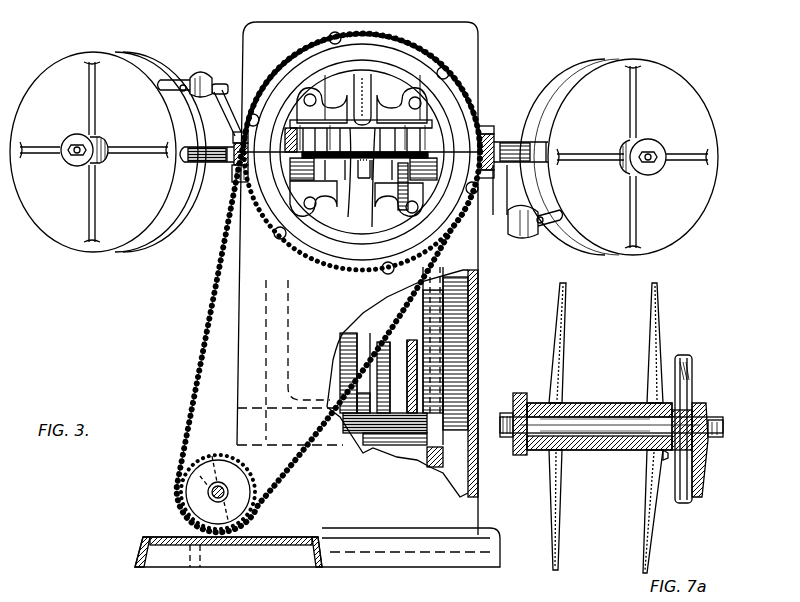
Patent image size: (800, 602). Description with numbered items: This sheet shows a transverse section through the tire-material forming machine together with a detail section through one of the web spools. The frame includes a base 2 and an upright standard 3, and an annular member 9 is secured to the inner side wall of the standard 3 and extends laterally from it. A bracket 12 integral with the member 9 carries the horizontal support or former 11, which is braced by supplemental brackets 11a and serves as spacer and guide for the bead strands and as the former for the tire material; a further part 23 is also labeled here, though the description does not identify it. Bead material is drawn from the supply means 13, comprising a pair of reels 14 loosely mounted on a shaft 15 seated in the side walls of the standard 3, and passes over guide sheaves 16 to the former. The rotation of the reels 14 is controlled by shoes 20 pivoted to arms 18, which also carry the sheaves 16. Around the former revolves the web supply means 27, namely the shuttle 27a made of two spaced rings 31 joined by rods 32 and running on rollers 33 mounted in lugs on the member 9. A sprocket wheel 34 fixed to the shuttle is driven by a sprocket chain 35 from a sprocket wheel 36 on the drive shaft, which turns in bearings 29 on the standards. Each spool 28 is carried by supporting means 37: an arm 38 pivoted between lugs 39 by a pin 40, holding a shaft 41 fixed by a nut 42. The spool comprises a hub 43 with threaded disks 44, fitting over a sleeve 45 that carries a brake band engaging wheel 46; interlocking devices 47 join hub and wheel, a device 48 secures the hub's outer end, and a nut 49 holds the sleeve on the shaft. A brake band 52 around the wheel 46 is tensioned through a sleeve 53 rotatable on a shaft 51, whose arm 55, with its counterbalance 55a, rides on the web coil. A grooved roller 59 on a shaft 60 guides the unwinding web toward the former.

In FIG. 3, the base 2 is at (135, 542).
In FIG. 3, the standard 3 is at (357, 278).
In FIG. 3, the annular member 9 is at (358, 70).
In FIG. 3, the support 11 is at (346, 244).
In FIG. 3, the supplemental brackets 11a is at (296, 115).
In FIG. 3, the bracket 12 is at (384, 224).
In FIG. 3, the supply means 13 is at (397, 382).
In FIG. 3, the reels 14 is at (420, 352).
In FIG. 3, the shaft 15 is at (478, 390).
In FIG. 3, the guide sheaves 16 is at (262, 220).
In FIG. 3, the arms 18 is at (455, 378).
In FIG. 3, the shoes 20 is at (470, 350).
In FIG. 3, the bracket 23 is at (292, 130).
In FIG. 3, the supply means 27 is at (312, 38).
In FIG. 3, the shuttle 27a is at (444, 66).
In FIG. 3, the spool 28 is at (94, 152).
In FIG. 3, the bearings 29 is at (212, 456).
In FIG. 3, the rings 31 is at (340, 262).
In FIG. 3, the rods 32 is at (330, 42).
In FIG. 3, the rollers 33 is at (366, 68).
In FIG. 3, the sprocket wheel 34 is at (302, 264).
In FIG. 3, the sprocket chain 35 is at (205, 326).
In FIG. 3, the sprocket wheel 36 is at (252, 472).
In FIG. 3, the supporting means 37 is at (232, 172).
In FIG. 7A, the arm 38 is at (716, 466).
In FIG. 3, the lugs 39 is at (475, 147).
In FIG. 3, the pivot pin 40 is at (488, 126).
In FIG. 3, the shaft 41 is at (70, 140).
In FIG. 7A, the nut 42 is at (724, 417).
In FIG. 7A, the hub 43 is at (598, 403).
In FIG. 3, the disks 44 is at (40, 215).
In FIG. 7A, the sleeve 45 is at (604, 452).
In FIG. 7A, the brake band engaging wheel 46 is at (692, 365).
In FIG. 7A, the interlocking devices 47 is at (665, 462).
In FIG. 7A, the device 48 is at (520, 456).
In FIG. 7A, the nut 49 is at (505, 440).
In FIG. 3, the shaft 51 is at (183, 88).
In FIG. 7A, the brake band 52 is at (684, 355).
In FIG. 3, the sleeve 53 is at (222, 84).
In FIG. 3, the arm 55 is at (182, 83).
In FIG. 3, the counterbalance 55a is at (208, 72).
In FIG. 3, the roller 59 is at (195, 205).
In FIG. 3, the shaft 60 is at (178, 155).